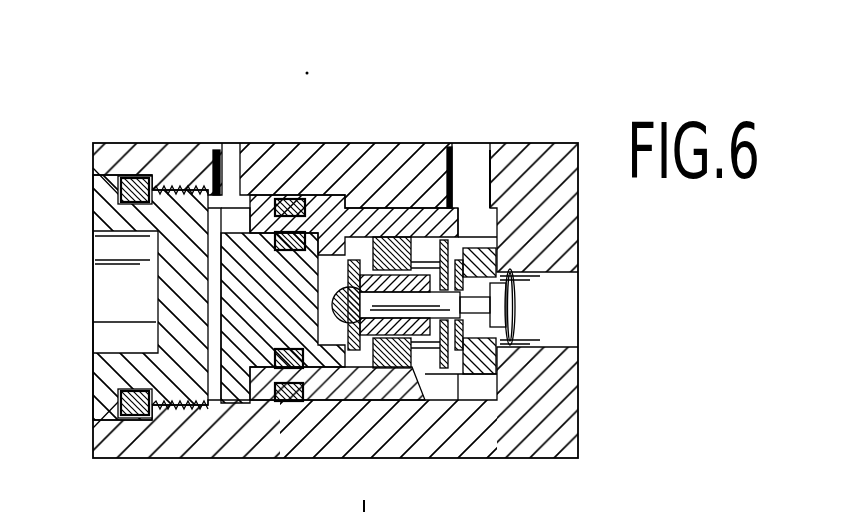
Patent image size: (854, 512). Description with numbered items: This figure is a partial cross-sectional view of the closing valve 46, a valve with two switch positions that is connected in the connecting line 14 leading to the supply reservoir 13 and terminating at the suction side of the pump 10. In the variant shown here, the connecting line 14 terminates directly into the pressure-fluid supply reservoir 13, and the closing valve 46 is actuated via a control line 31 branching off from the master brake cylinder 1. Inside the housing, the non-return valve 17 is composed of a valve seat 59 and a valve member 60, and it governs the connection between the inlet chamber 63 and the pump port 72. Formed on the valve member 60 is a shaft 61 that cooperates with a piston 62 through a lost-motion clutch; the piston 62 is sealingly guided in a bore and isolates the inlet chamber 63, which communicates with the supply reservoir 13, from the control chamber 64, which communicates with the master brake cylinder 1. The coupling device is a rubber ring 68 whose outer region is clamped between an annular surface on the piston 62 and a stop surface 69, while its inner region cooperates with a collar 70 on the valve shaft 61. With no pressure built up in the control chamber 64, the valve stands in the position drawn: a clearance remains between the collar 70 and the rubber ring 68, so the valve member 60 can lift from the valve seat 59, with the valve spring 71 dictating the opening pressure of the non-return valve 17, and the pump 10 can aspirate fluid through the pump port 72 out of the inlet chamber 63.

The master brake cylinder 1 is at (232, 172).
The pump 10 is at (553, 308).
The supply reservoir 13 is at (466, 175).
The connecting line 14 is at (480, 168).
The non-return valve 17 is at (525, 235).
The control line 31 is at (210, 160).
The closing valve 46 is at (77, 418).
The valve seat 59 is at (500, 352).
The valve member 60 is at (515, 330).
The shaft 61 is at (458, 367).
The piston 62 is at (262, 330).
The inlet chamber 63 is at (440, 345).
The control chamber 64 is at (215, 355).
The rubber ring 68 is at (398, 335).
The stop surface 69 is at (430, 340).
The collar 70 is at (337, 372).
The valve spring 71 is at (506, 246).
The pump port 72 is at (568, 316).